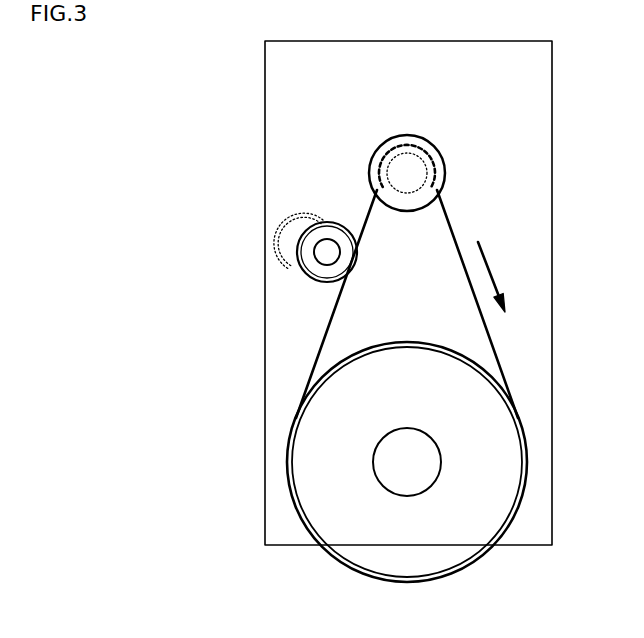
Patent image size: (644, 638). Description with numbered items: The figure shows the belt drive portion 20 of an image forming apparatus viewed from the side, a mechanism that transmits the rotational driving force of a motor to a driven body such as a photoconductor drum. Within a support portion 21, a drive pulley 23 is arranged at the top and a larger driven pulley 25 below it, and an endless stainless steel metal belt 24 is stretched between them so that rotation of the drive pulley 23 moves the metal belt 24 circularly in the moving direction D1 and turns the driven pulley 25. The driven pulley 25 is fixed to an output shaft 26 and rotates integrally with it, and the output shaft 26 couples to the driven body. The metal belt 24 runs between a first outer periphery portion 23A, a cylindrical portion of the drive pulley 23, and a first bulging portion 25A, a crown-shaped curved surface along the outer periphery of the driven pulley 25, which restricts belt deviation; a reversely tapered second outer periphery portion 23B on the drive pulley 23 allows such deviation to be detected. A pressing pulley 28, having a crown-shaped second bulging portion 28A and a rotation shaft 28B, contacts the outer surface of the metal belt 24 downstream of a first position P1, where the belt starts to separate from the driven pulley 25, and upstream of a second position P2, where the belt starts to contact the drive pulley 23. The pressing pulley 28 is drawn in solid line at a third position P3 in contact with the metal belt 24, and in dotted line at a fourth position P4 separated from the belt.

The belt drive portion 20 is at (390, 311).
The support portion 21 is at (540, 93).
The drive pulley 23 is at (446, 143).
The first outer periphery portion 23A is at (407, 195).
The second outer periphery portion 23B is at (412, 136).
The metal belt 24 is at (449, 221).
The driven pulley 25 is at (472, 352).
The first bulging portion 25A is at (425, 344).
The output shaft 26 is at (410, 497).
The pressing pulley 28 is at (300, 251).
The second bulging portion 28A is at (337, 281).
The rotation shaft 28B is at (334, 240).
The first position P1 is at (292, 413).
The second position P2 is at (379, 164).
The third position P3 is at (312, 286).
The fourth position P4 is at (293, 280).
The moving direction D1 is at (492, 270).